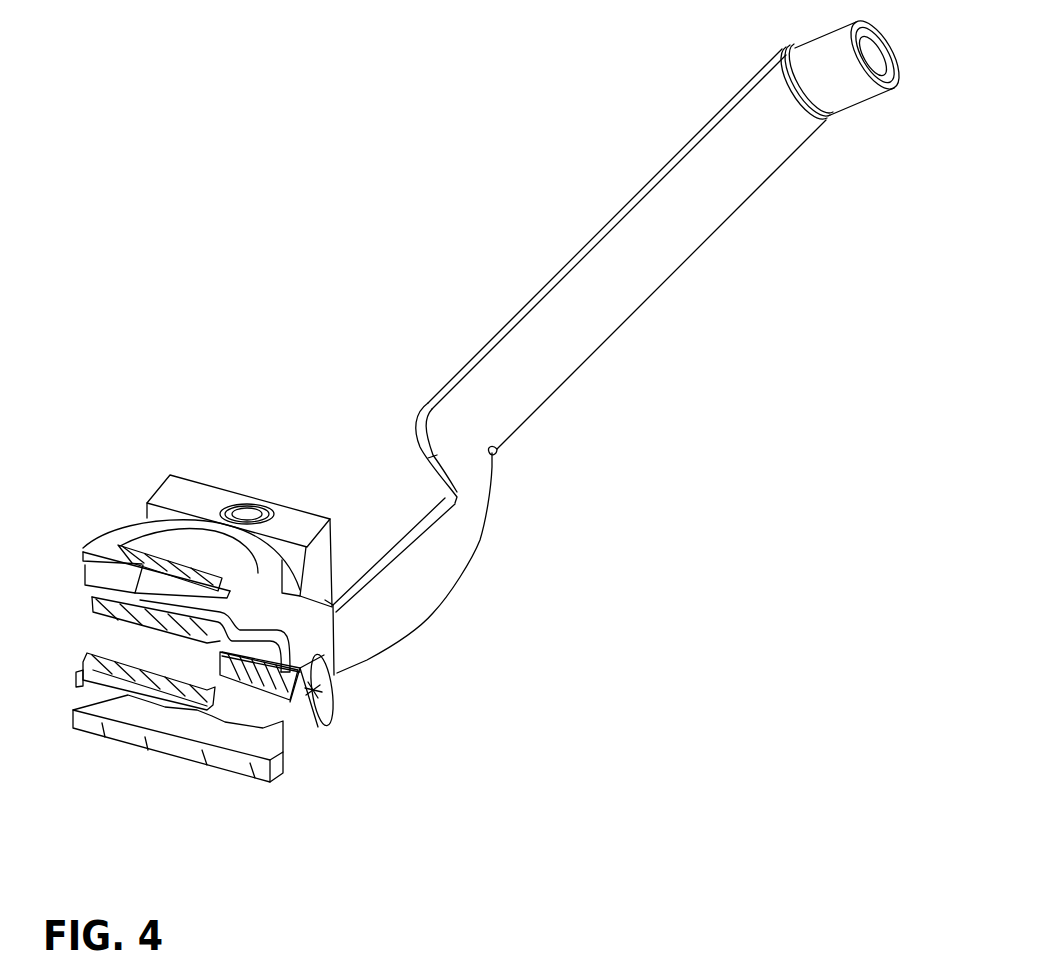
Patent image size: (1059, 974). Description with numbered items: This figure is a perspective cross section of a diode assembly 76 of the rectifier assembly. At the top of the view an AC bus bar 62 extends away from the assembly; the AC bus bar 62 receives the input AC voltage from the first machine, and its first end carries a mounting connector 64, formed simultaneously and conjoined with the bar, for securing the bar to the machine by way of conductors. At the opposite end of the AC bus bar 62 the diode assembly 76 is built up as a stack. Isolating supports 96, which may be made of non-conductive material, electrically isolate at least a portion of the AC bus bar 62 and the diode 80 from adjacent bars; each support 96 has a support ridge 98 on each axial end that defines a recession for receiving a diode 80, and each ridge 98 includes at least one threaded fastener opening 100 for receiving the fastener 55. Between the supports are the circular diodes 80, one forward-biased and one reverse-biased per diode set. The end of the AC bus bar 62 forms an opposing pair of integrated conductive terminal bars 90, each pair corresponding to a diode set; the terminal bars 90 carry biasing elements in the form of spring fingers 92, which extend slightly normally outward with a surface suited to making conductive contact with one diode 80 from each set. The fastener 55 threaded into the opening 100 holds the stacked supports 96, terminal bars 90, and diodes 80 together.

The diode assembly 76 is at (306, 266).
The AC bus bar 62 is at (600, 284).
The mounting connector 64 is at (858, 106).
The support ridge 98 is at (210, 498).
The threaded fastener opening 100 is at (258, 498).
The circular diode 80 is at (108, 545).
The spring finger 92 is at (182, 587).
The terminal bar 90 is at (90, 592).
The isolating support 96 is at (143, 655).
The fastener 55 is at (318, 675).